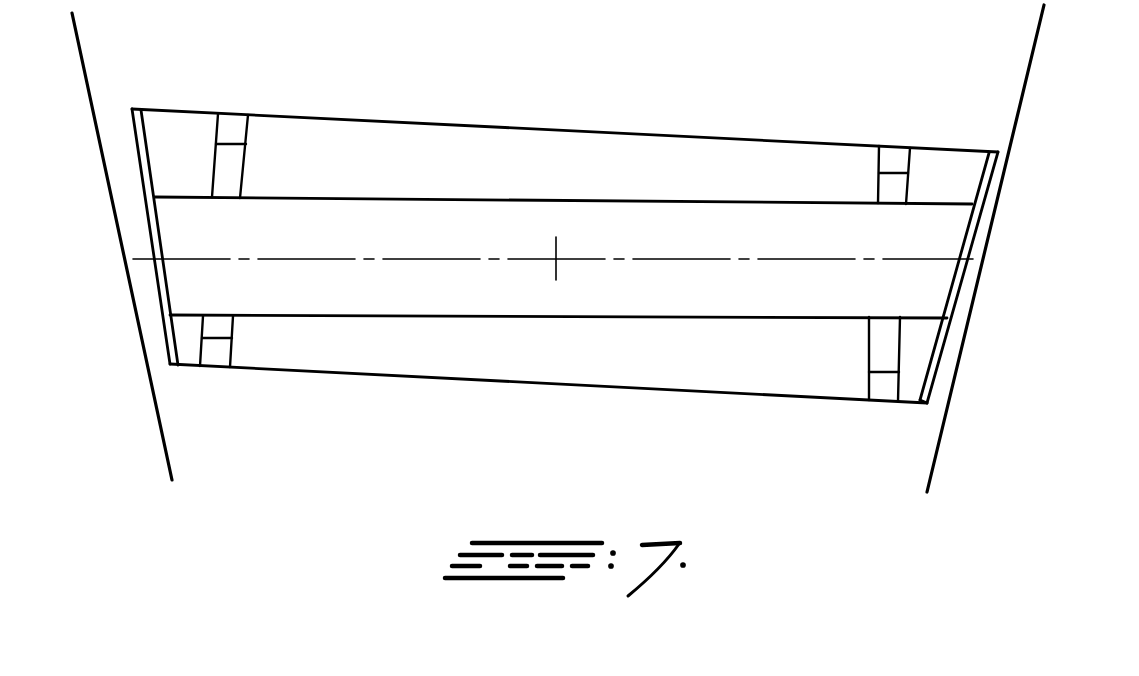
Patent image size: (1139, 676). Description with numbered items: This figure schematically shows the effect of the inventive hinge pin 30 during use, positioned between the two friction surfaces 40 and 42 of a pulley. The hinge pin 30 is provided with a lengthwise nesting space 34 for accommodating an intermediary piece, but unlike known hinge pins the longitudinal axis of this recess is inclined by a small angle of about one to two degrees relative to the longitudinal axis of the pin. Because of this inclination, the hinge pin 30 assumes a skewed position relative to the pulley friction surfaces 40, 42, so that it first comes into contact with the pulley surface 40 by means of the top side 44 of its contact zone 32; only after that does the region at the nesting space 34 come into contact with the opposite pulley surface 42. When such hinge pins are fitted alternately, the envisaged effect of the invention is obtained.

The hinge pin 30 is at (632, 150).
The contact zone 32 is at (950, 323).
The nesting space 34 is at (158, 314).
The friction surface 40 is at (1028, 85).
The friction surface 42 is at (112, 198).
The top side 44 is at (993, 150).